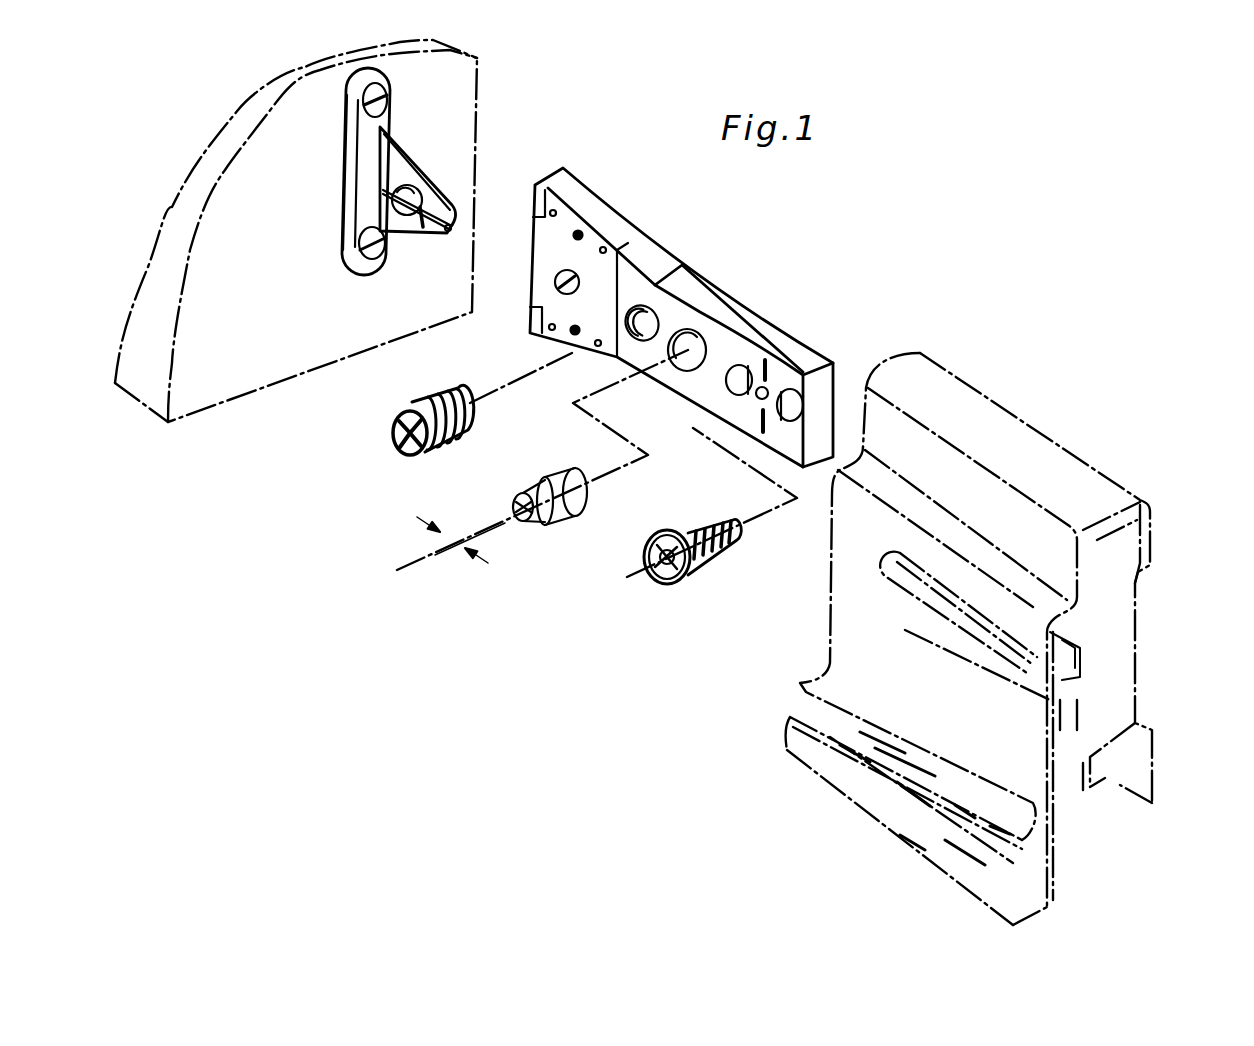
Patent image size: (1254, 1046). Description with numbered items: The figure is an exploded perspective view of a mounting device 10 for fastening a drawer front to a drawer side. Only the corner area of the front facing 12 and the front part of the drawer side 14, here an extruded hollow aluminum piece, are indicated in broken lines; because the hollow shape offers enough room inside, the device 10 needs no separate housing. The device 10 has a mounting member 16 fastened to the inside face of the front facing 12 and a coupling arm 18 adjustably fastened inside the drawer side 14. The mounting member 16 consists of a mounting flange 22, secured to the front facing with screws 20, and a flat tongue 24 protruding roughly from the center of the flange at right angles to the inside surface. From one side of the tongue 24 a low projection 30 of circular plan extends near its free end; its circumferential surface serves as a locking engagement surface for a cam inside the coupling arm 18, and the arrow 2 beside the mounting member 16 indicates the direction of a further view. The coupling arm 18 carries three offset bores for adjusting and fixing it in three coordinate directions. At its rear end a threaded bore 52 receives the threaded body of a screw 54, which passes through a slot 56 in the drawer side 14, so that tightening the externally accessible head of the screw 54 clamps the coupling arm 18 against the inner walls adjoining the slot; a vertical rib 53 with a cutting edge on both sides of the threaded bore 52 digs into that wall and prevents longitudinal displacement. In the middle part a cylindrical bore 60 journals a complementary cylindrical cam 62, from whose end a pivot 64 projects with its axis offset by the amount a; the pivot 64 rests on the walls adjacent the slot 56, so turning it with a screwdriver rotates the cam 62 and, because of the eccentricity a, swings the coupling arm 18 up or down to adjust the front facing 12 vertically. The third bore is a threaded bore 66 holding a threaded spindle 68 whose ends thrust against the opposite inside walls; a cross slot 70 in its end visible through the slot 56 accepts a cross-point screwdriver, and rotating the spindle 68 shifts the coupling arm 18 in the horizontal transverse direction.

The section line indicator 2 is at (462, 232).
The mounting device 10 is at (575, 268).
The front facing 12 is at (272, 143).
The drawer side 14 is at (1001, 630).
The mounting member 16 is at (394, 191).
The coupling arm 18 is at (703, 318).
The screws 20 is at (388, 98).
The mounting flange 22 is at (363, 170).
The flat tongue 24 is at (388, 206).
The projection 30 is at (419, 212).
The threaded bore 52 is at (772, 380).
The vertical rib 53 is at (757, 395).
The screw 54 is at (711, 573).
The slot 56 is at (1073, 670).
The cylindrical bore 60 is at (700, 345).
The cylindrical cam 62 is at (542, 464).
The pivot 64 is at (518, 497).
The threaded bore 66 is at (652, 318).
The threaded spindle 68 is at (432, 406).
The cross slot 70 is at (392, 436).
The eccentricity a is at (440, 552).